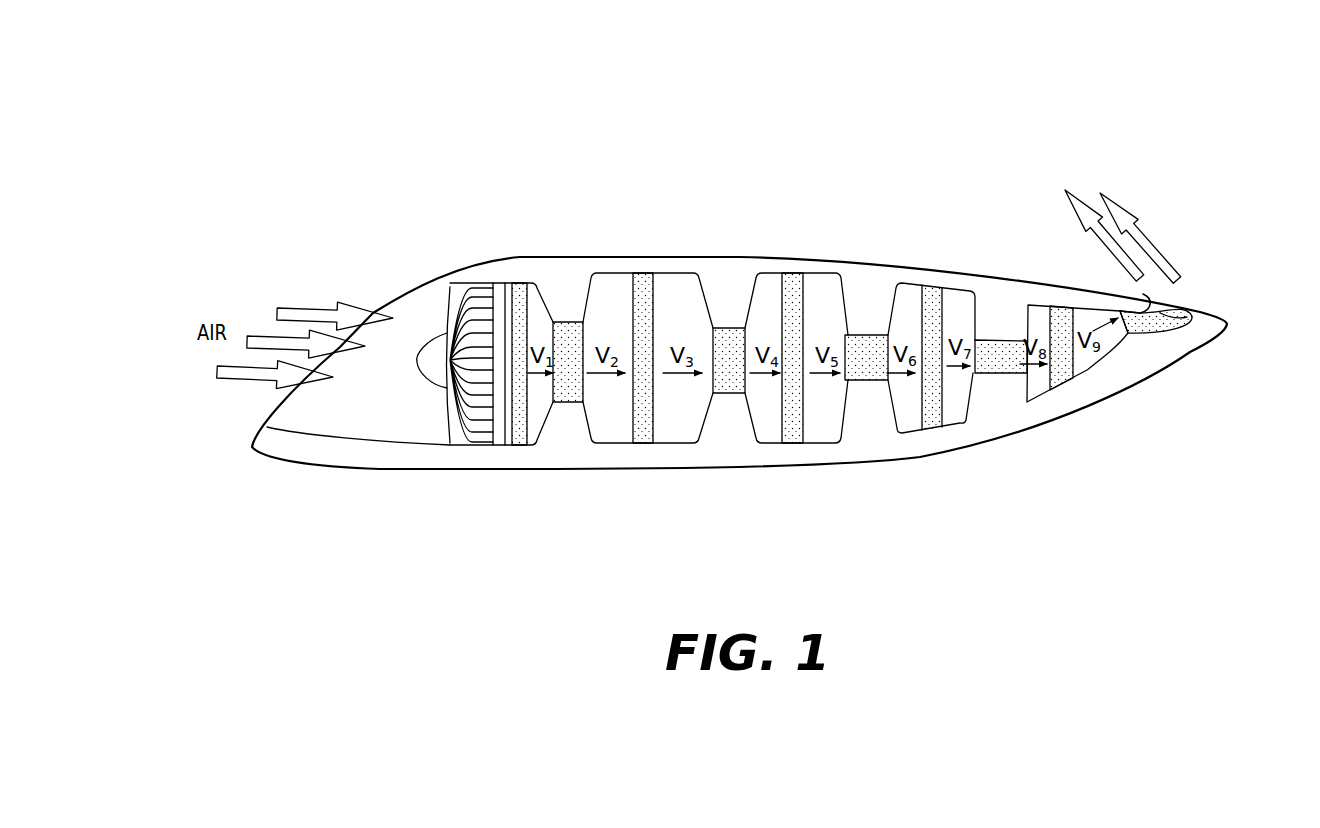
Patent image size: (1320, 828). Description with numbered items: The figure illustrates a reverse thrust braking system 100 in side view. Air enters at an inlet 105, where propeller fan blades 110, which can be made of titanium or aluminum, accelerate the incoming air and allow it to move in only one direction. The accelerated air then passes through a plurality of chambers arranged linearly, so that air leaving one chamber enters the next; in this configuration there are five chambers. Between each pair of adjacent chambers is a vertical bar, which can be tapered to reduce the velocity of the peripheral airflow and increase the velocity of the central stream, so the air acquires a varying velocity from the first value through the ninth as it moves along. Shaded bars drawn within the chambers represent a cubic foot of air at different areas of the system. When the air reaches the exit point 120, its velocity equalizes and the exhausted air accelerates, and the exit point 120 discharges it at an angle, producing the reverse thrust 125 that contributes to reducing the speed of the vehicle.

The reverse thrust braking system 100 is at (231, 186).
The inlet 105 is at (313, 413).
The propeller fan blades 110 is at (432, 418).
The exit point 120 is at (1198, 330).
The reverse thrust 125 is at (1170, 258).